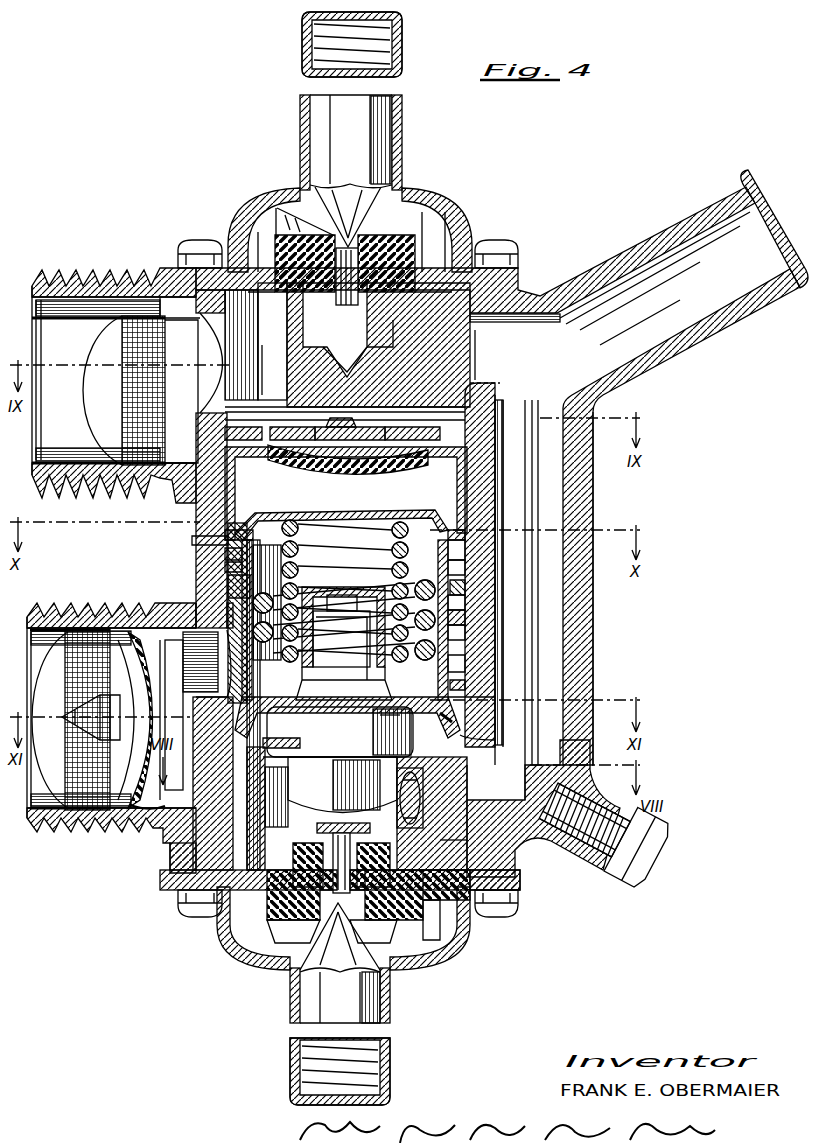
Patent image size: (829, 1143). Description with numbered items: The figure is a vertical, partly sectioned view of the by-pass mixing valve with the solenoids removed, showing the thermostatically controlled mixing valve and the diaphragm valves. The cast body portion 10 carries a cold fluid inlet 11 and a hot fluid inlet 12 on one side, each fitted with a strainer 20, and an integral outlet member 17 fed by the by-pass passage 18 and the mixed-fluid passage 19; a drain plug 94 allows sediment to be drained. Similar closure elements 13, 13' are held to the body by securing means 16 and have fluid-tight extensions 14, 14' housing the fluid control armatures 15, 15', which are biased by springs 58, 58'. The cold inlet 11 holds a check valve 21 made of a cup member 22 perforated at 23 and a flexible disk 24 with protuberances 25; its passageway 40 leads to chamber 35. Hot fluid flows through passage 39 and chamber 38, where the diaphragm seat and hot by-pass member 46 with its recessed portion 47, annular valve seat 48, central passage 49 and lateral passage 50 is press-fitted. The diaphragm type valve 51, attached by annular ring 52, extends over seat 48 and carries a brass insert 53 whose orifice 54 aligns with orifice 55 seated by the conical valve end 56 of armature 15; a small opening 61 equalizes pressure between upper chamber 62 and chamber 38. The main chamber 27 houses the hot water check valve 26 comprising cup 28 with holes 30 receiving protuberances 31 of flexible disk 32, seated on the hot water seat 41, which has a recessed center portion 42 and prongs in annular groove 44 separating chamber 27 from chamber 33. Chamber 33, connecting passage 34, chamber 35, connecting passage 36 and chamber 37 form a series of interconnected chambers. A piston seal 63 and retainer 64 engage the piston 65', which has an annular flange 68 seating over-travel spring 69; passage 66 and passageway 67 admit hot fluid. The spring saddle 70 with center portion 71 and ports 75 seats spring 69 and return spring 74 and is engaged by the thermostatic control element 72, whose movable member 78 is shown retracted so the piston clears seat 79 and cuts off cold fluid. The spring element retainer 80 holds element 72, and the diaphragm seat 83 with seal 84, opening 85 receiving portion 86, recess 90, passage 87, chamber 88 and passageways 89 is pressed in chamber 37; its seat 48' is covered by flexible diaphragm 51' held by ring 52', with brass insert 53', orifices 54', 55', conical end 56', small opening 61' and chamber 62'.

The body portion 10 is at (598, 500).
The cold fluid inlet 11 is at (78, 838).
The hot fluid inlet 12 is at (66, 492).
The closure element 13 is at (350, 225).
The closure element 13' is at (358, 931).
The extension 14 is at (332, 142).
The extension 14' is at (365, 996).
The fluid control plunger or armature 15 is at (351, 141).
The plunger or armature 15' is at (340, 995).
The securing means 16 is at (200, 242).
The outlet member 17 is at (762, 228).
The passage 18 is at (498, 322).
The passage 19 is at (530, 770).
The strainer 20 is at (92, 400).
The cold fluid check valve 21 is at (176, 714).
The cup member 22 is at (140, 806).
The perforations 23 is at (128, 662).
The flexible disk 24 is at (164, 720).
The protuberances 25 is at (104, 735).
The hot water check valve 26 is at (446, 495).
The main chamber 27 is at (228, 432).
The cup 28 is at (462, 452).
The holes 30 is at (412, 436).
The protuberances 31 is at (350, 429).
The flexible disk 32 is at (398, 470).
The chamber 33 is at (465, 552).
The connecting passage 34 is at (465, 618).
The chamber 35 is at (465, 663).
The connecting passage 36 is at (465, 708).
The chamber 37 is at (495, 740).
The chamber 38 is at (222, 306).
The passage 39 is at (215, 412).
The passageway 40 is at (210, 650).
The hot water seat 41 is at (495, 510).
The recessed center portion 42 is at (352, 515).
The annular groove 44 is at (465, 535).
The diaphragm seat and hot by-pass member 46 is at (282, 333).
The recessed portion 47 is at (262, 375).
The annular valve seat 48 is at (347, 351).
The seat 48' is at (480, 806).
The central passage 49 is at (392, 345).
The lateral passage 50 is at (489, 373).
The diaphragm type valve 51 is at (272, 227).
The flexible diaphragm 51' is at (384, 912).
The annular ring 52 is at (475, 254).
The annular ring 52' is at (516, 884).
The brass insert 53 is at (345, 358).
The brass insert 53' is at (351, 845).
The orifice 54 is at (347, 297).
The orifice 54' is at (373, 931).
The orifice 55 is at (305, 250).
The orifice 55' is at (293, 932).
The conical valve end 56 is at (348, 217).
The conical valve end 56' is at (340, 936).
The armature spring 58 is at (332, 44).
The springs 58' is at (321, 1071).
The small opening 61 is at (387, 252).
The small opening 61' is at (410, 932).
The upper chamber 62 is at (422, 224).
The chamber 62' is at (454, 949).
The piston seal 63 is at (465, 604).
The piston seal retainer 64 is at (465, 590).
The piston 65' is at (491, 630).
The passage 66 is at (230, 552).
The passageway 67 is at (240, 590).
The annular flange 68 is at (465, 568).
The over-travel spring 69 is at (230, 568).
The spring saddle 70 is at (380, 715).
The center portion 71 is at (328, 610).
The thermostatic control element 72 is at (346, 751).
The return spring 74 is at (314, 530).
The ports 75 is at (377, 628).
The movable member 78 is at (342, 602).
The seat 79 is at (424, 722).
The spring element retainer 80 is at (275, 706).
The diaphragm seat 83 is at (467, 808).
The seal 84 is at (275, 752).
The opening 85 is at (290, 760).
The complementally formed portion 86 is at (351, 795).
The passage 87 is at (322, 830).
The chamber 88 is at (275, 782).
The passageways 89 is at (412, 818).
The recess 90 is at (249, 808).
The drain plug 94 is at (640, 848).